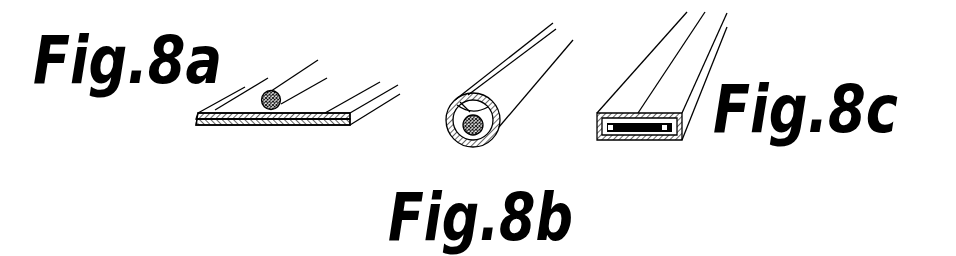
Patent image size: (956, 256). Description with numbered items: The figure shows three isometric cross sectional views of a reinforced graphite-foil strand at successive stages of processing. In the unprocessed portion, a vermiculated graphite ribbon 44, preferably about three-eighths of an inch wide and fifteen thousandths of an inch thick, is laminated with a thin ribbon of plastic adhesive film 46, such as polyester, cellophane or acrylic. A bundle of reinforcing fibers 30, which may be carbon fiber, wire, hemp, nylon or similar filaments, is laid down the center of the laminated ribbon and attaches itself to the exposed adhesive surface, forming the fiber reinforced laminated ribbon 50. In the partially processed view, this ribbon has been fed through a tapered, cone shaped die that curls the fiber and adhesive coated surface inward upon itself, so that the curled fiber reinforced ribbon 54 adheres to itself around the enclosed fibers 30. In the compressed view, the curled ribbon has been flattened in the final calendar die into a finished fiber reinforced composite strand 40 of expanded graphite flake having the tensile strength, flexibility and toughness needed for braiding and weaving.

In FIG. 8A, the reinforcing fibers 30 is at (298, 79).
In FIG. 8B, the reinforcing fibers 30 is at (481, 116).
In FIG. 8A, the vermiculated graphite ribbon 44 is at (230, 125).
In FIG. 8B, the vermiculated graphite ribbon 44 is at (483, 142).
In FIG. 8A, the plastic adhesive film 46 is at (308, 125).
In FIG. 8B, the plastic adhesive film 46 is at (450, 132).
In FIG. 8A, the fiber reinforced laminated ribbon 50 is at (283, 128).
In FIG. 8B, the curled fiber reinforced ribbon 54 is at (453, 95).
In FIG. 8C, the fiber reinforced composite strand 40 is at (658, 150).